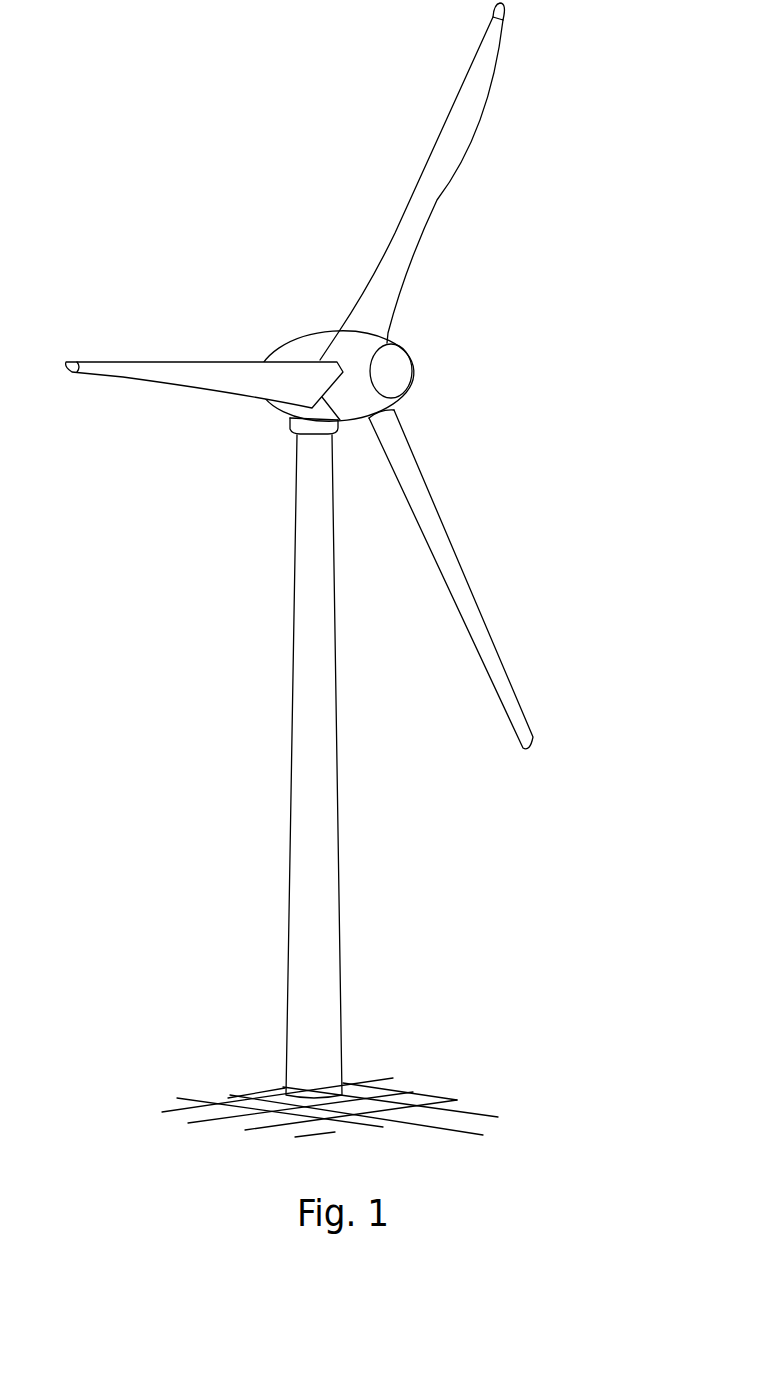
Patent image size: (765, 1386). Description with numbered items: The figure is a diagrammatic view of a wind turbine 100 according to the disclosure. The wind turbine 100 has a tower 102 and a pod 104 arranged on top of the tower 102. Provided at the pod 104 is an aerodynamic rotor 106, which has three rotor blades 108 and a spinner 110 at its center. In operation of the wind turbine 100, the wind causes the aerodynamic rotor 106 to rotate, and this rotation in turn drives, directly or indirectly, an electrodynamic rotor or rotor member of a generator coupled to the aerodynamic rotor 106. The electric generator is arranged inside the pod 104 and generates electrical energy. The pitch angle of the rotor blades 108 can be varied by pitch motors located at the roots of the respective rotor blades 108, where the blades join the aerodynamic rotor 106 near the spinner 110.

The wind turbine 100 is at (347, 570).
The tower 102 is at (320, 865).
The pod 104 is at (307, 348).
The aerodynamic rotor 106 is at (347, 376).
The rotor blades 108 is at (455, 130).
The spinner 110 is at (396, 374).